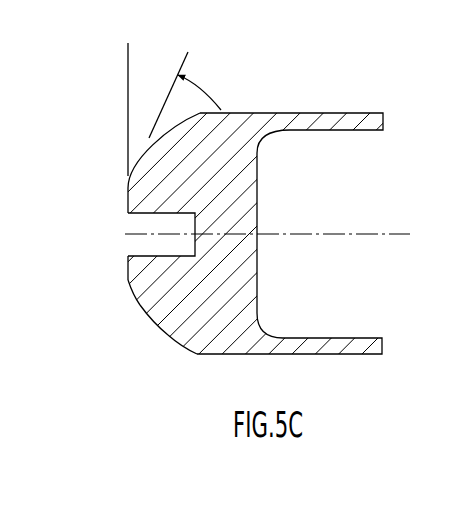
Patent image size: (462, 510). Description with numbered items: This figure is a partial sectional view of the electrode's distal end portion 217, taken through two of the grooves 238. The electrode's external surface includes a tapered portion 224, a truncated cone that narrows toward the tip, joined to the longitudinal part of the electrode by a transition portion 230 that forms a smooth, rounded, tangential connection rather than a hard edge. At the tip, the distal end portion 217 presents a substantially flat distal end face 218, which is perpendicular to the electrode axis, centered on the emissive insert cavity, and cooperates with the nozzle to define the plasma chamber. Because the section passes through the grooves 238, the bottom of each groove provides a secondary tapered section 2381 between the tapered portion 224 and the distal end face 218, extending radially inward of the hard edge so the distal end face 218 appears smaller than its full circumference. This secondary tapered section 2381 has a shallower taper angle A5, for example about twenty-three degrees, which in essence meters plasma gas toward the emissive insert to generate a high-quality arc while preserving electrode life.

The taper angle A5 is at (127, 67).
The distal end portion 217 is at (100, 155).
The distal end face 218 is at (124, 263).
The grooves 238 is at (169, 160).
The secondary tapered section 2381 is at (125, 294).
The tapered portion 224 is at (146, 319).
The transition portion 230 is at (166, 343).